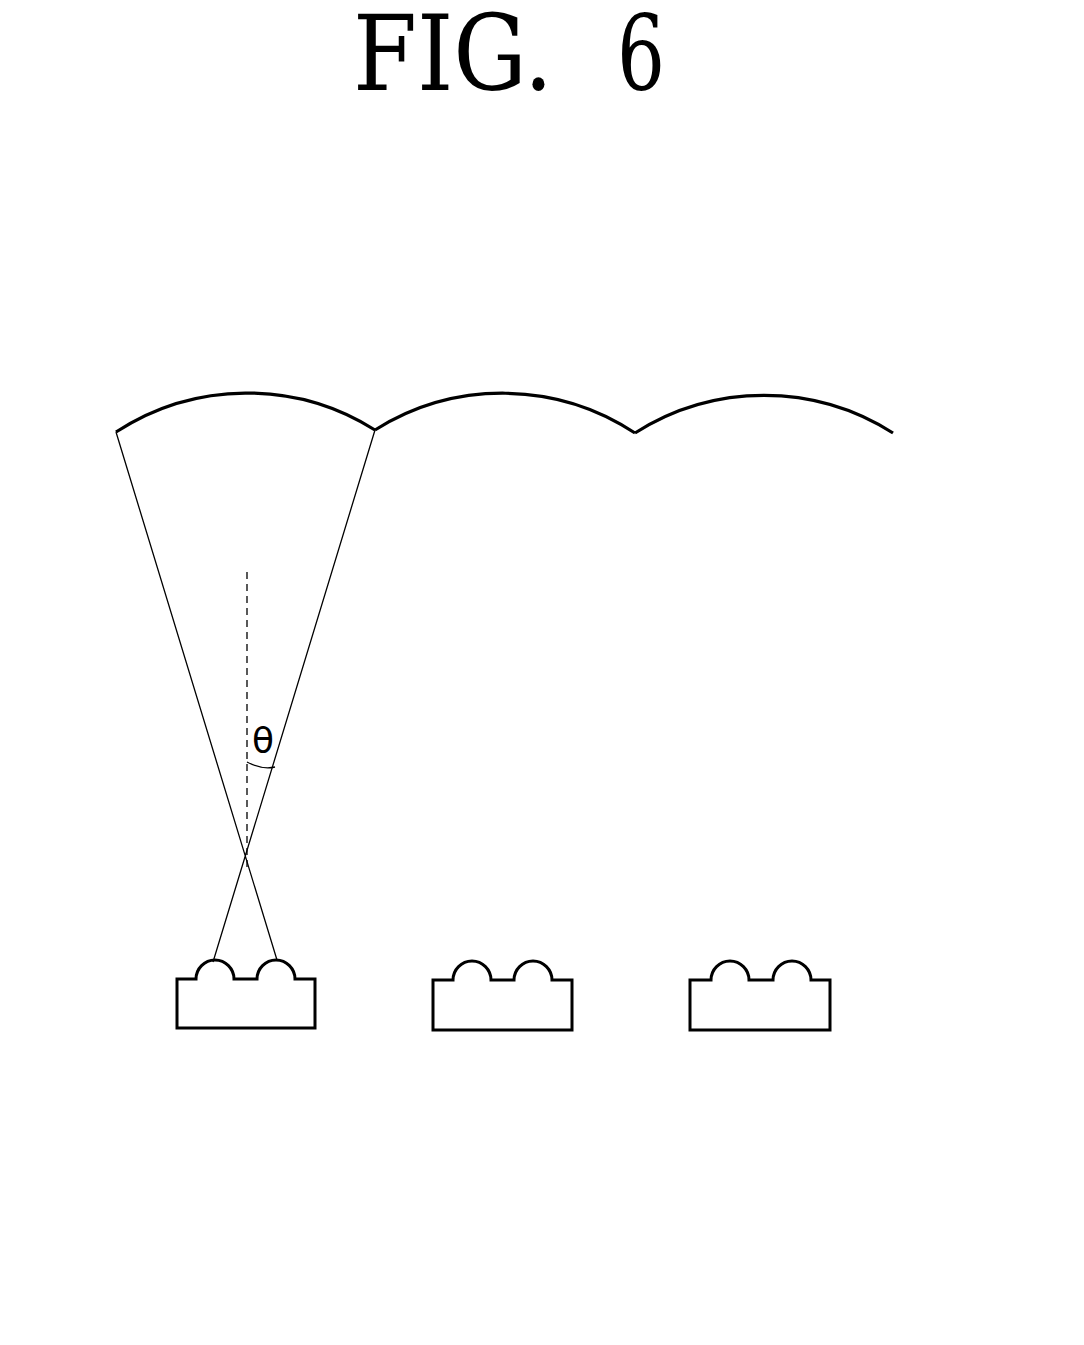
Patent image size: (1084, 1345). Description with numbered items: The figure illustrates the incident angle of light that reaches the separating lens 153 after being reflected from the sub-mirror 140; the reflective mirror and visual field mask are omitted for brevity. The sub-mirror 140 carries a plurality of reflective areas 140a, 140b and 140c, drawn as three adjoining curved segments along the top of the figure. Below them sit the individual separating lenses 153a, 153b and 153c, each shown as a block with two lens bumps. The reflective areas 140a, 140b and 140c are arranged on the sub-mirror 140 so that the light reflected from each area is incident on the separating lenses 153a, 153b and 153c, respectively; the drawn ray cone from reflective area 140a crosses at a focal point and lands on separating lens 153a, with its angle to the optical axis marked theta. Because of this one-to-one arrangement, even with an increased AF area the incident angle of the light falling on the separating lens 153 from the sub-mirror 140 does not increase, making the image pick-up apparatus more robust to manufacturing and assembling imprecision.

The sub-mirror 140 is at (504, 318).
The reflective area 140a is at (248, 393).
The reflective area 140b is at (505, 394).
The reflective area 140c is at (765, 394).
The separating lens 153 is at (503, 1108).
The separating lens 153a is at (247, 1043).
The separating lens 153b is at (506, 1045).
The separating lens 153c is at (758, 1045).